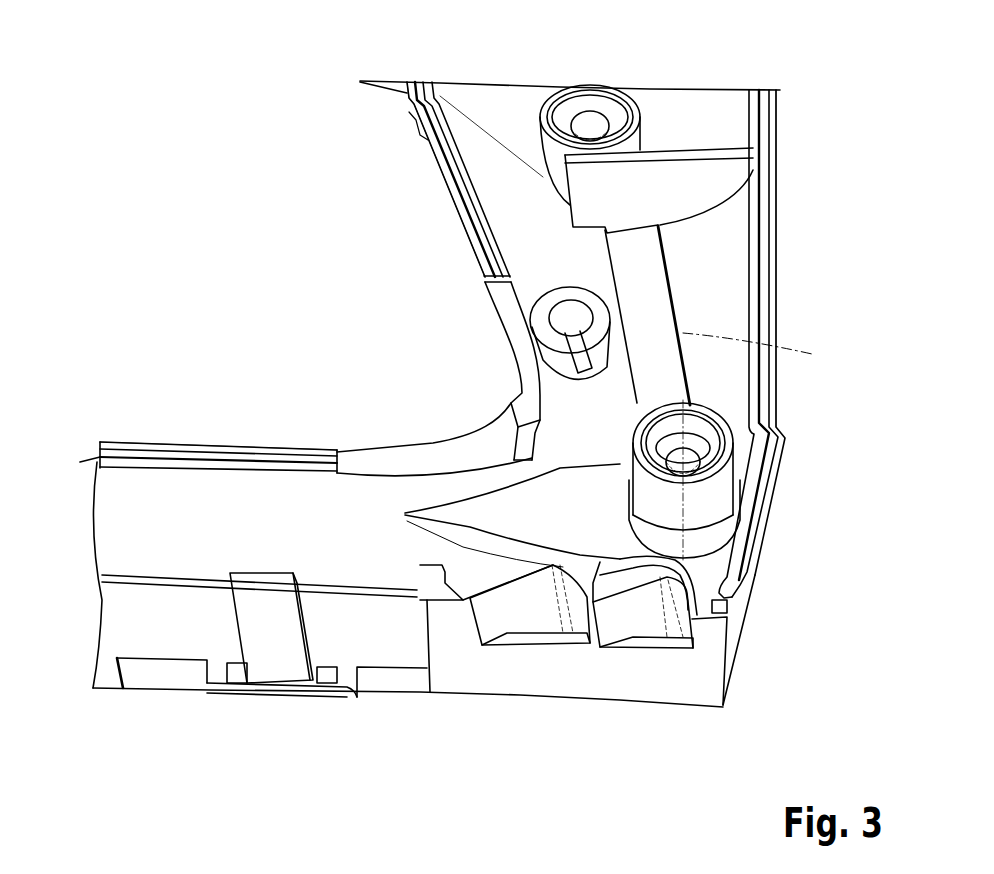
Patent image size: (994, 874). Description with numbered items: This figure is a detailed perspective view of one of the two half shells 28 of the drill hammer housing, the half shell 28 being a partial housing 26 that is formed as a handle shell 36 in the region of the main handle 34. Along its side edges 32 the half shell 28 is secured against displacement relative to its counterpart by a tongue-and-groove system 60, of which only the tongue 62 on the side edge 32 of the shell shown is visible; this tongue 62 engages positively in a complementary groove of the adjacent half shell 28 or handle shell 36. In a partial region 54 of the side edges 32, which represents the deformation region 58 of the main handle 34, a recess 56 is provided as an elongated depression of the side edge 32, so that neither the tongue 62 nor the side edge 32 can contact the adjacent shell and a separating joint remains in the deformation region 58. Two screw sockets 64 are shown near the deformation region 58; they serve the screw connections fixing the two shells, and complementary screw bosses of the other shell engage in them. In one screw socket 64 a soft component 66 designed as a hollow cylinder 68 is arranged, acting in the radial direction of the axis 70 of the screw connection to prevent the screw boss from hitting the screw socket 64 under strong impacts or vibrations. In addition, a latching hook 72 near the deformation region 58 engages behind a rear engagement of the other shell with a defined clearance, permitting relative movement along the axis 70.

The partial housing 26 is at (740, 276).
The half shell 28 is at (740, 276).
The side edge 32 is at (435, 160).
The main handle 34 is at (816, 593).
The handle shell 36 is at (733, 232).
The partial region 54 is at (455, 371).
The recess 56 is at (388, 455).
The deformation region 58 is at (453, 392).
The tongue-and-groove system 60 is at (485, 309).
The tongue 62 is at (432, 82).
The screw socket 64 is at (603, 108).
The soft component 66 is at (760, 437).
The hollow cylinder 68 is at (707, 430).
The axis 70 is at (766, 344).
The latching hook 72 is at (277, 642).